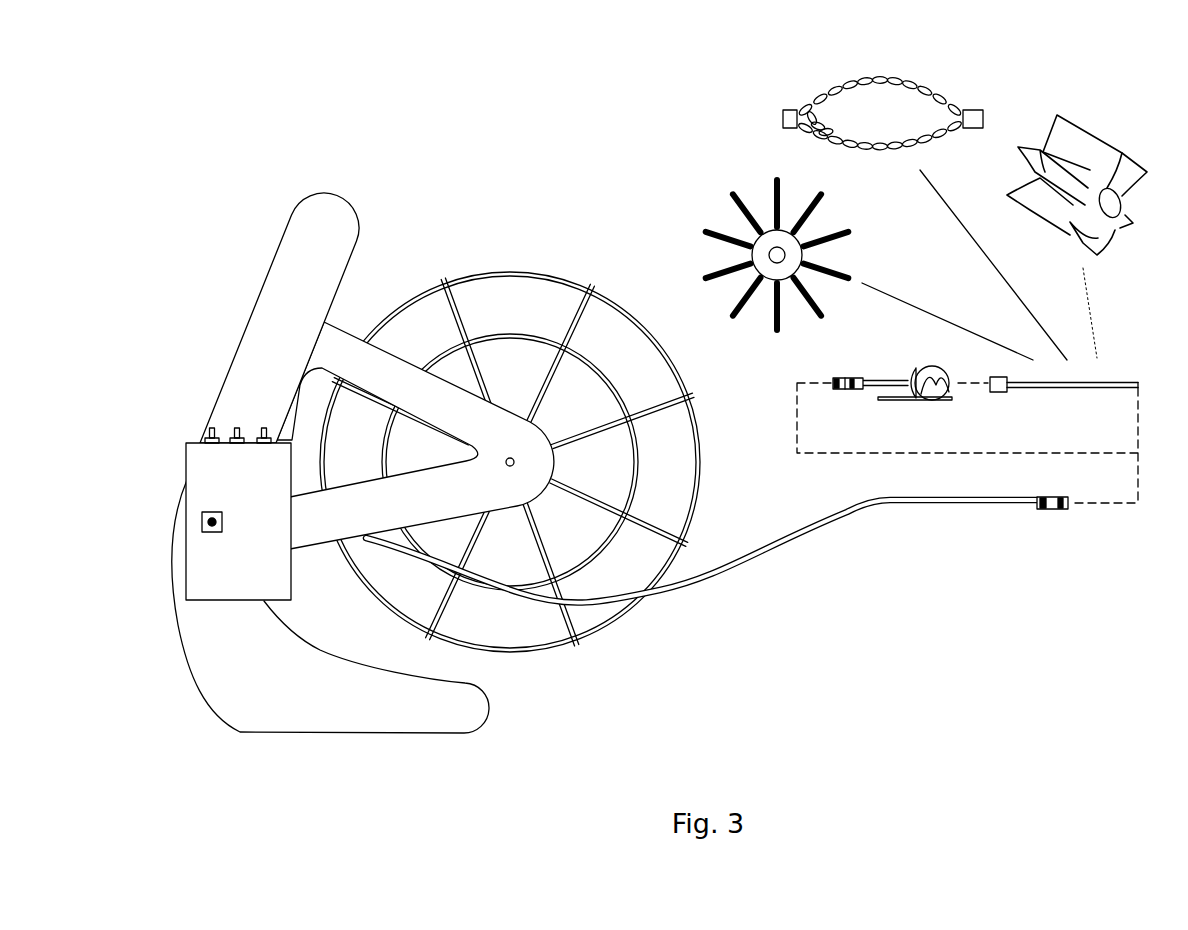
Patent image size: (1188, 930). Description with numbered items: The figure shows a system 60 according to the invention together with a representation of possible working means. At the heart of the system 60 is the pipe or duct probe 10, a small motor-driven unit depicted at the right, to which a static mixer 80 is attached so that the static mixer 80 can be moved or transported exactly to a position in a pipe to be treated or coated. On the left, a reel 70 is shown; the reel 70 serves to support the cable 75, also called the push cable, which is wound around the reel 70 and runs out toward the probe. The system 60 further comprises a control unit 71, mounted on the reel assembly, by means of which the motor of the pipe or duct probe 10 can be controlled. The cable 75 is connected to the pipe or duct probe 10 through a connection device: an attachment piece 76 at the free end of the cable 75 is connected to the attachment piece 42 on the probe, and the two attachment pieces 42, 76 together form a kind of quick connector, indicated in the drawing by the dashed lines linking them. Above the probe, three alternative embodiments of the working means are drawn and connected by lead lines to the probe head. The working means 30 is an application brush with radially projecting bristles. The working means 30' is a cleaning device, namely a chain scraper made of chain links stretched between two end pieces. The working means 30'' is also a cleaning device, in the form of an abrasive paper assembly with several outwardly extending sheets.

The system 60 is at (550, 140).
The reel 70 is at (317, 233).
The control unit 71 is at (227, 590).
The cable 75 is at (828, 525).
The attachment piece 76 is at (1055, 512).
The pipe or duct probe 10 is at (903, 353).
The attachment piece 42 is at (838, 390).
The static mixer 80 is at (888, 402).
The working means 30 is at (748, 230).
The working means 30' is at (880, 82).
The working means 30'' is at (1088, 150).